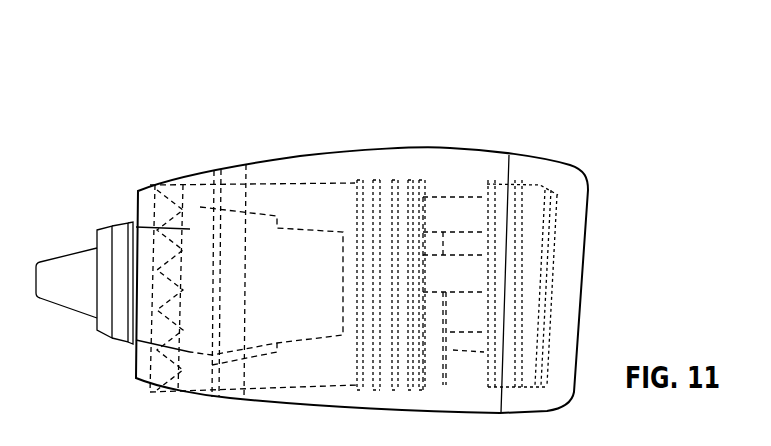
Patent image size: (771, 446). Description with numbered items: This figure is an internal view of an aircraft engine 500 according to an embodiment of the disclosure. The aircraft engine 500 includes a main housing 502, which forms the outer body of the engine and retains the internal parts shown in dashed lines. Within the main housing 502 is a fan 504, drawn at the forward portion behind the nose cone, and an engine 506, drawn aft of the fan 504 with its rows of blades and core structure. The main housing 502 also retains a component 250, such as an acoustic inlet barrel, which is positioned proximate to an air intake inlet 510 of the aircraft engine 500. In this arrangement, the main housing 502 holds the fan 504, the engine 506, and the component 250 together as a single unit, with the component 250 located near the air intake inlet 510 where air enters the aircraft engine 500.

The aircraft engine 500 is at (597, 62).
The main housing 502 is at (351, 151).
The fan 504 is at (172, 200).
The engine 506 is at (427, 184).
The component 250 is at (537, 204).
The air intake inlet 510 is at (587, 250).